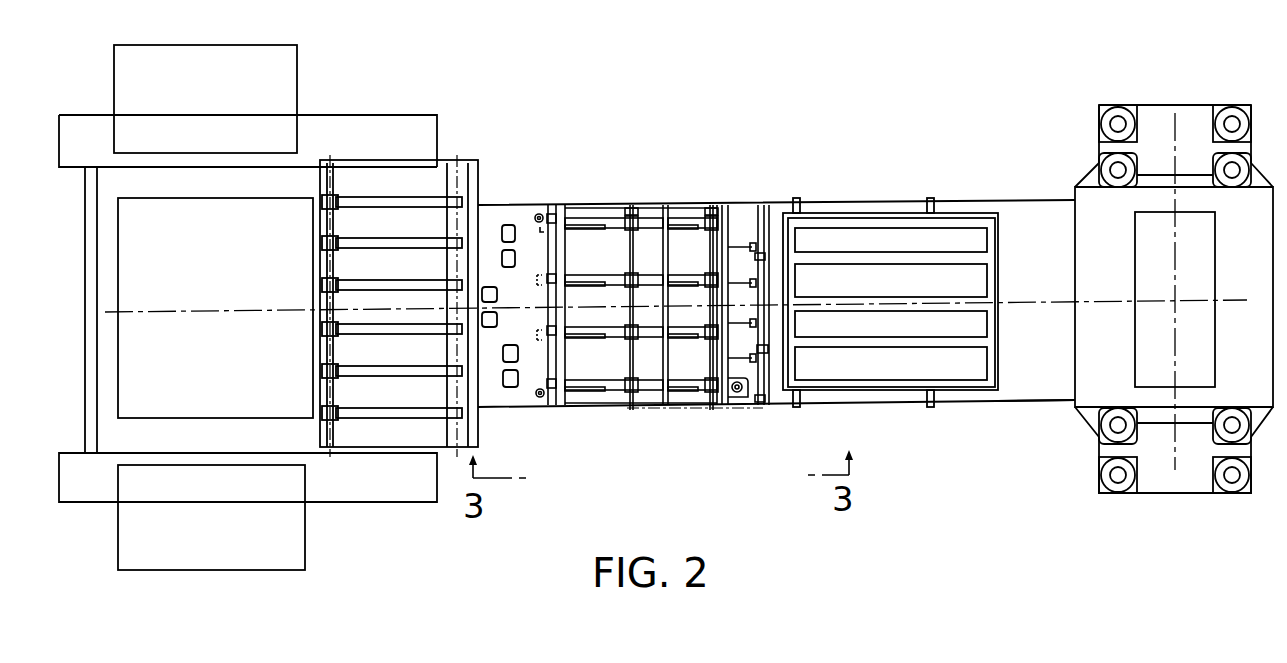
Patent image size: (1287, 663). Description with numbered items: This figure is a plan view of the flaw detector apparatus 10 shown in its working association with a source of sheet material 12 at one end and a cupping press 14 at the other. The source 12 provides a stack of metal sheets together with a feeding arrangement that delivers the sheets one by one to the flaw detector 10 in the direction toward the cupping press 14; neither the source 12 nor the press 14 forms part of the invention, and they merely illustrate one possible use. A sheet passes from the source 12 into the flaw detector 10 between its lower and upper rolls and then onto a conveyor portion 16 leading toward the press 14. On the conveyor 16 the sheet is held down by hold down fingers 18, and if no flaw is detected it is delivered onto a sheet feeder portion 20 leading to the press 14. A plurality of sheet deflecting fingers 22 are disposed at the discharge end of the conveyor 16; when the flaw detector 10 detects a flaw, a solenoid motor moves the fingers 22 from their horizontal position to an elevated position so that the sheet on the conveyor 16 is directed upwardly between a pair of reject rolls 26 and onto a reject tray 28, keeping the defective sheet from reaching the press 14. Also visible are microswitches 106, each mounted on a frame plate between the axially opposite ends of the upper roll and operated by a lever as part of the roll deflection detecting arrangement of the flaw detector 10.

The flaw detector apparatus 10 is at (530, 176).
The source of sheet material 12 is at (351, 86).
The cupping press 14 is at (1168, 80).
The conveyor portion 16 is at (660, 192).
The hold down fingers 18 is at (693, 330).
The sheet feeder portion 20 is at (1026, 390).
The sheet deflecting fingers 22 is at (737, 286).
The reject rolls 26 is at (775, 352).
The reject tray 28 is at (877, 221).
The microswitch 106 is at (499, 227).